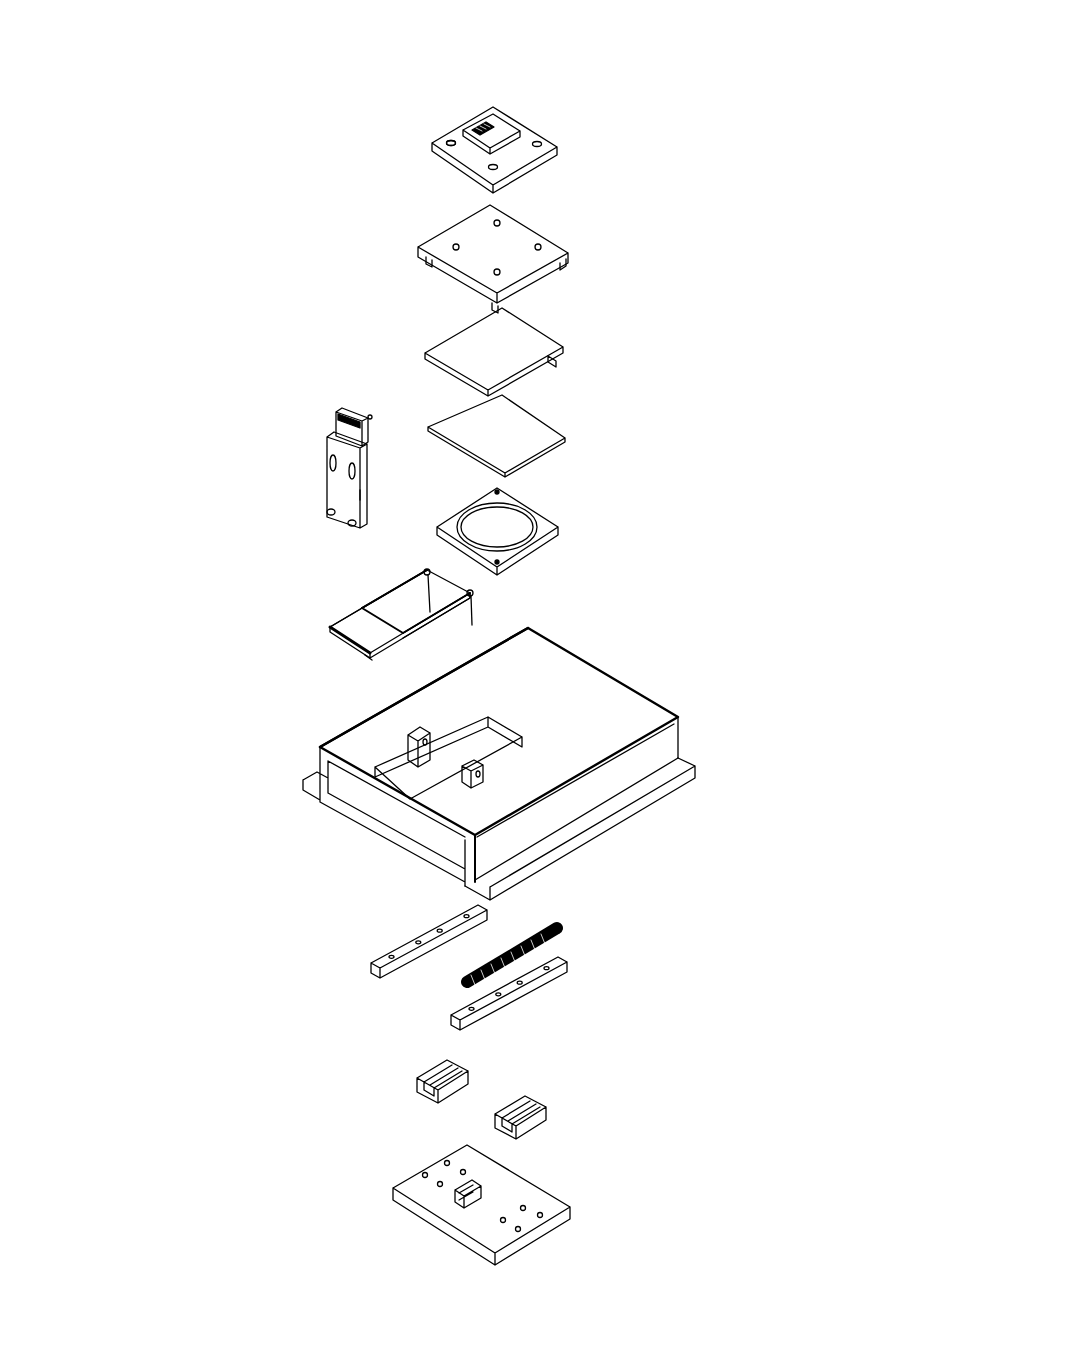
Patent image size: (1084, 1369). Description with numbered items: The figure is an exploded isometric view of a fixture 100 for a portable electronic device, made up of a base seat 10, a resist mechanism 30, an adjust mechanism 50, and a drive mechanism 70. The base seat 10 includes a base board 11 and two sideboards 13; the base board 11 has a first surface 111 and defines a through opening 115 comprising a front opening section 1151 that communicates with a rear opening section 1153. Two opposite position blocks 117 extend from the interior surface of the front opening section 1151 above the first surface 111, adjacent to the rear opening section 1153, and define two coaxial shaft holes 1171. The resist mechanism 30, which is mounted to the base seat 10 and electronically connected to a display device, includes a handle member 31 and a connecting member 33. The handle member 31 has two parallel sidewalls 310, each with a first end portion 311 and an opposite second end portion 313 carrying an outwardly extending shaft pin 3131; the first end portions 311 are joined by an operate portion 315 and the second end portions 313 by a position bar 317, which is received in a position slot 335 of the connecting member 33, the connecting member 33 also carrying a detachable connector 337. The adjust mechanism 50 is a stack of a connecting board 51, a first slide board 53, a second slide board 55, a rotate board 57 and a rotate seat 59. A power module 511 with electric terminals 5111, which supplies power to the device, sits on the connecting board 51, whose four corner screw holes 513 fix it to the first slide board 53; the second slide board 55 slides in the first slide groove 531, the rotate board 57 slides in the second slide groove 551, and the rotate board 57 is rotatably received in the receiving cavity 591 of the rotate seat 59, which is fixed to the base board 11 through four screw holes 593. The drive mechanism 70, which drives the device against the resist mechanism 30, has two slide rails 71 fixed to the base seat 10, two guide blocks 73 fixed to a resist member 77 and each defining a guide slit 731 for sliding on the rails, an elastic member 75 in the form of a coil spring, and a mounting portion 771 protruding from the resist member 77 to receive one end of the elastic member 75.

The fixture 100 is at (293, 72).
The base seat 10 is at (697, 700).
The base board 11 is at (580, 695).
The first surface 111 is at (360, 745).
The sideboard 13 is at (665, 778).
The through opening 115 is at (343, 924).
The front opening section 1151 is at (427, 790).
The rear opening section 1153 is at (460, 757).
The position block 117 is at (484, 764).
The shaft hole 1171 is at (479, 780).
The resist mechanism 30 is at (228, 465).
The handle member 31 is at (352, 618).
The sidewall 310 is at (385, 590).
The first end portion 311 is at (378, 655).
The second end portion 313 is at (457, 625).
The shaft pin 3131 is at (474, 597).
The operate portion 315 is at (345, 632).
The position bar 317 is at (431, 605).
The connecting member 33 is at (337, 485).
The position slot 335 is at (362, 497).
The connector 337 is at (338, 427).
The adjust mechanism 50 is at (677, 72).
The connecting board 51 is at (535, 135).
The power module 511 is at (512, 130).
The electric terminal 5111 is at (470, 125).
The screw hole 513 is at (450, 140).
The first slide board 53 is at (548, 252).
The first slide groove 531 is at (438, 267).
The second slide board 55 is at (548, 340).
The second slide groove 551 is at (553, 358).
The rotate board 57 is at (545, 440).
The rotate seat 59 is at (548, 525).
The receiving cavity 591 is at (508, 522).
The screw hole 593 is at (440, 520).
The drive mechanism 70 is at (251, 985).
The slide rail 71 is at (372, 968).
The guide block 73 is at (420, 1078).
The guide slit 731 is at (540, 1103).
The elastic member 75 is at (465, 985).
The resist member 77 is at (405, 1185).
The mounting portion 771 is at (475, 1190).